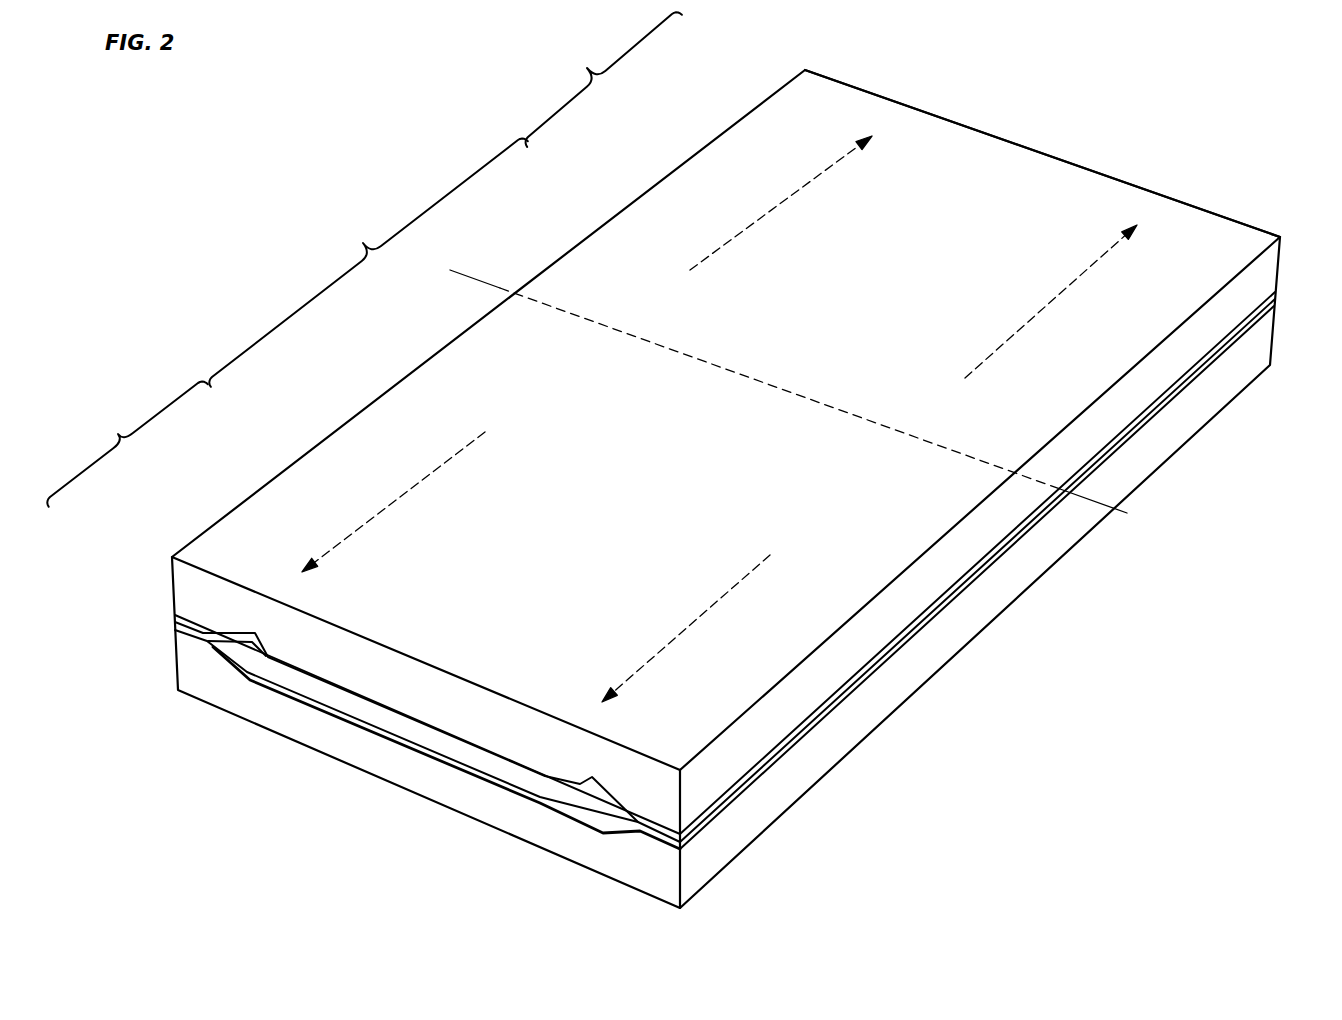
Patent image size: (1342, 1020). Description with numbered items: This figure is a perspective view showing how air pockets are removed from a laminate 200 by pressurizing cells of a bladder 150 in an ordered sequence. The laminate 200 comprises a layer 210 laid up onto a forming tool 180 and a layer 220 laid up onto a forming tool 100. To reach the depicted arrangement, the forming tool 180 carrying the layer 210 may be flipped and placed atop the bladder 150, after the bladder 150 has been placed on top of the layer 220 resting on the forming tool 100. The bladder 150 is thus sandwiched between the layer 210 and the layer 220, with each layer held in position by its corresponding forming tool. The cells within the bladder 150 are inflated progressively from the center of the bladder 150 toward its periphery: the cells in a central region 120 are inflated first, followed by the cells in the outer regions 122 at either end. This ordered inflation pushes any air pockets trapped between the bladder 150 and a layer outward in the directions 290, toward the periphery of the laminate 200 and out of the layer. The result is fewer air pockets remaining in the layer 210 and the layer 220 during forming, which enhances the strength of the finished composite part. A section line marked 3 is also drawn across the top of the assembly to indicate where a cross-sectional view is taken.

The forming tool 100 is at (494, 870).
The region 120 is at (368, 263).
The region 122 is at (364, 259).
The bladder 150 is at (290, 680).
The forming tool 180 is at (1152, 150).
The laminate 200 is at (1293, 273).
The layer 210 is at (463, 738).
The layer 220 is at (333, 712).
The directions 290 is at (1036, 320).
The section line 3- 3 is at (460, 308).